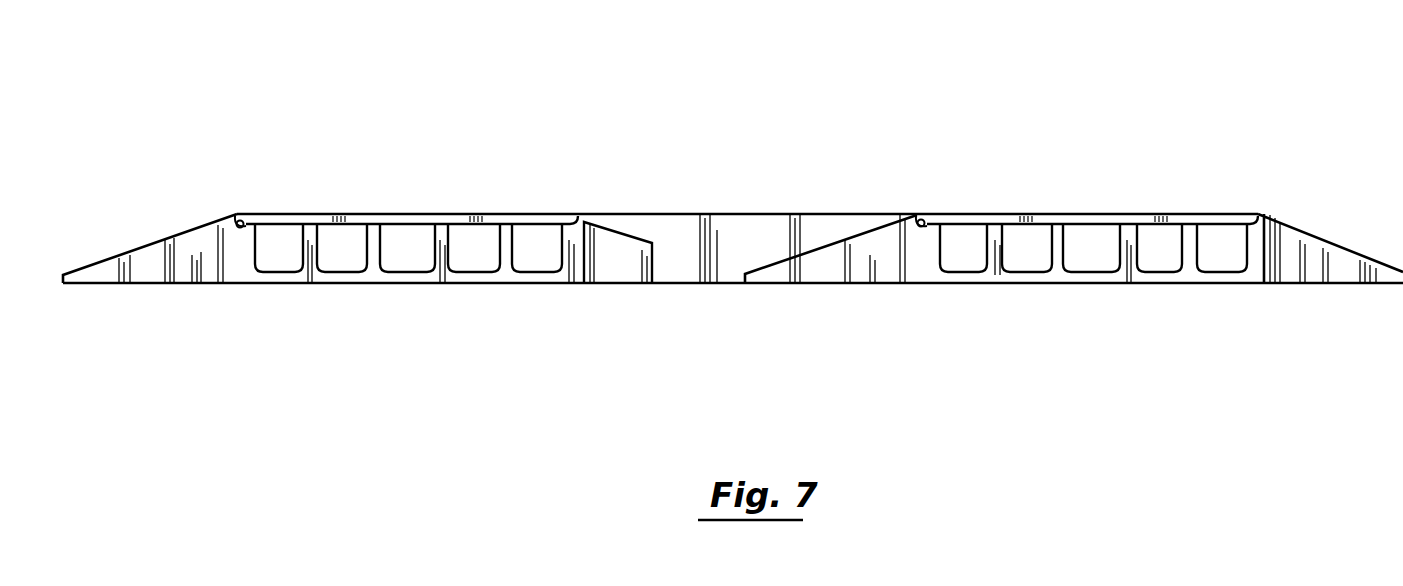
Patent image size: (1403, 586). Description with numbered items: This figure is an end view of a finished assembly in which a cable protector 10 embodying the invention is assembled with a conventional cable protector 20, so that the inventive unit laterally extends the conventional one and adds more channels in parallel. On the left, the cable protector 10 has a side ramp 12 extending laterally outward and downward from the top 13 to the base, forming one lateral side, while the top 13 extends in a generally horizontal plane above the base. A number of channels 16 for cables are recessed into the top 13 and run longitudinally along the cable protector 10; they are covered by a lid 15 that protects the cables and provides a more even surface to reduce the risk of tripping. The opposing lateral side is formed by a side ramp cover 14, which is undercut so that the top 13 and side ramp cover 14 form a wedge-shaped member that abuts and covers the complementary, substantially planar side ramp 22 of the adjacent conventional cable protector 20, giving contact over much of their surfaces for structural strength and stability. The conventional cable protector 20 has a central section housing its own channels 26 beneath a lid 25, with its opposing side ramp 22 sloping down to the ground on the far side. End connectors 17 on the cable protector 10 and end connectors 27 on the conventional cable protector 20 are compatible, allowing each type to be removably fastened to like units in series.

The cable protector 10 is at (318, 180).
The side ramp 12 is at (178, 240).
The top 13 is at (648, 214).
The side ramp cover 14 is at (828, 250).
The lid 15 is at (426, 214).
The channels 16 is at (412, 258).
The end connectors 17 is at (193, 284).
The conventional cable protector 20 is at (1023, 178).
The side ramp 22 is at (1300, 245).
The lid 25 is at (1128, 214).
The channels 26 is at (1158, 258).
The end connectors 27 is at (873, 284).